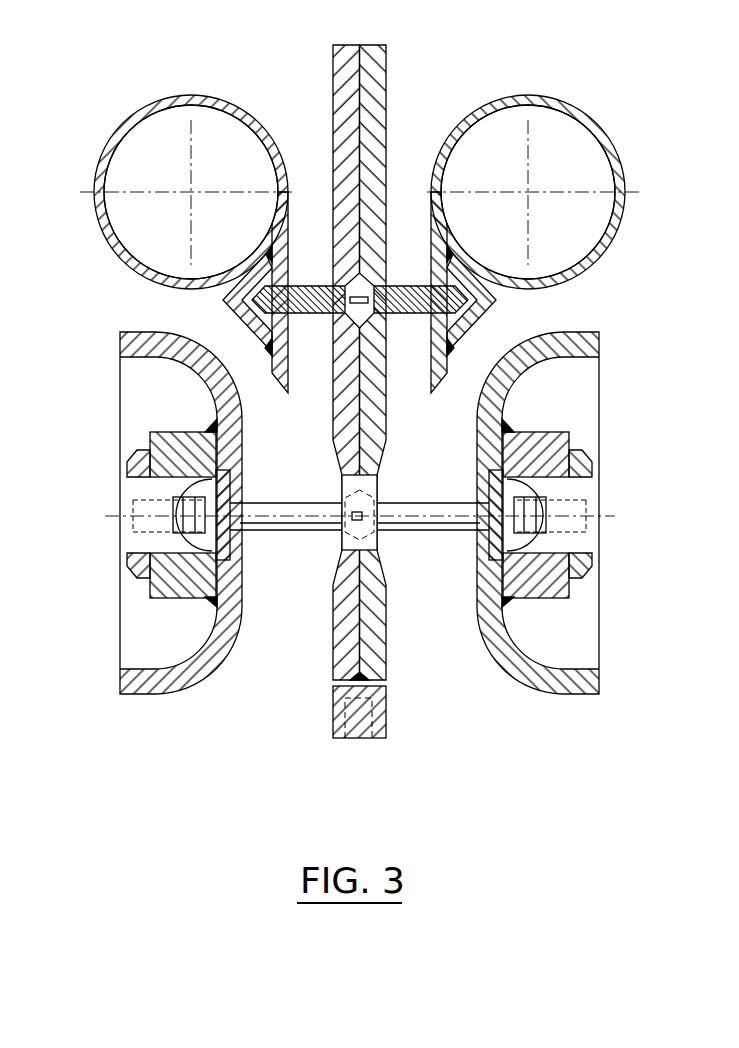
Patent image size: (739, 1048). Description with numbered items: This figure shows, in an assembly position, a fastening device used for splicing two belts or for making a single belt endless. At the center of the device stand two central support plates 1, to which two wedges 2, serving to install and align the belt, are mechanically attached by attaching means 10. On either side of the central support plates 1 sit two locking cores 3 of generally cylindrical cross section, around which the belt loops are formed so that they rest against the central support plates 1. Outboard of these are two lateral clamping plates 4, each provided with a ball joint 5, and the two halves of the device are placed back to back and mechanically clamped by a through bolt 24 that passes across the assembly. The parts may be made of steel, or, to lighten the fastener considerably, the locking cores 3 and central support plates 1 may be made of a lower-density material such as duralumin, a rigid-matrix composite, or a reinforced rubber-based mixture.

The central support plate 1 is at (333, 62).
The wedge 2 is at (218, 318).
The locking core 3 is at (113, 131).
The lateral clamping plate 4 is at (128, 343).
The ball joint 5 is at (592, 462).
The attaching means 10 is at (407, 316).
The through bolt 24 is at (292, 517).